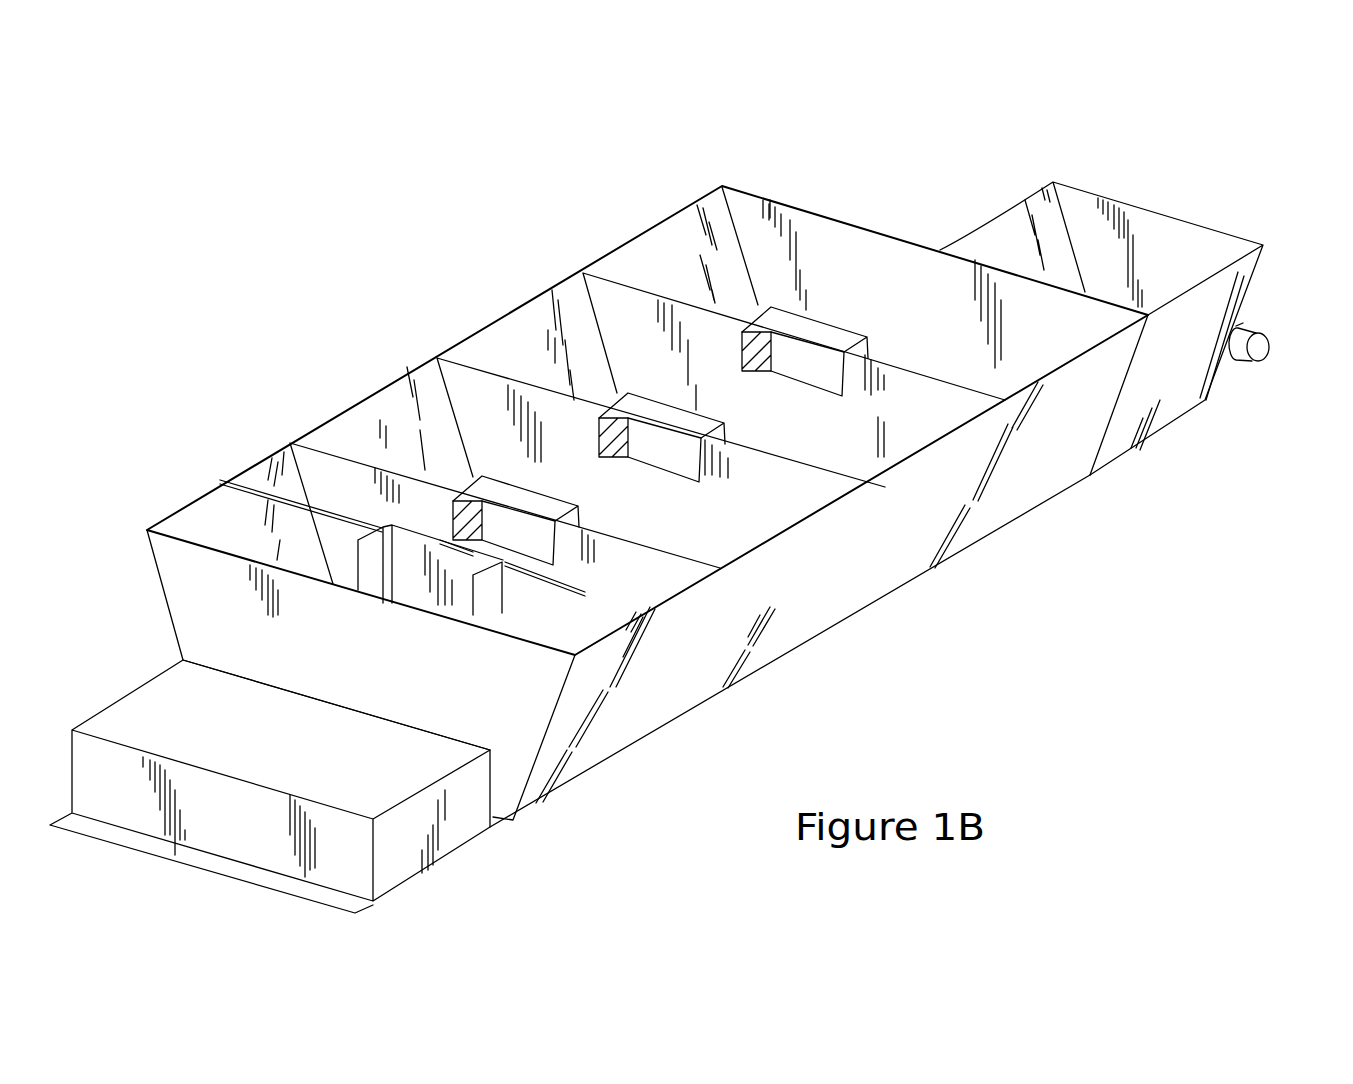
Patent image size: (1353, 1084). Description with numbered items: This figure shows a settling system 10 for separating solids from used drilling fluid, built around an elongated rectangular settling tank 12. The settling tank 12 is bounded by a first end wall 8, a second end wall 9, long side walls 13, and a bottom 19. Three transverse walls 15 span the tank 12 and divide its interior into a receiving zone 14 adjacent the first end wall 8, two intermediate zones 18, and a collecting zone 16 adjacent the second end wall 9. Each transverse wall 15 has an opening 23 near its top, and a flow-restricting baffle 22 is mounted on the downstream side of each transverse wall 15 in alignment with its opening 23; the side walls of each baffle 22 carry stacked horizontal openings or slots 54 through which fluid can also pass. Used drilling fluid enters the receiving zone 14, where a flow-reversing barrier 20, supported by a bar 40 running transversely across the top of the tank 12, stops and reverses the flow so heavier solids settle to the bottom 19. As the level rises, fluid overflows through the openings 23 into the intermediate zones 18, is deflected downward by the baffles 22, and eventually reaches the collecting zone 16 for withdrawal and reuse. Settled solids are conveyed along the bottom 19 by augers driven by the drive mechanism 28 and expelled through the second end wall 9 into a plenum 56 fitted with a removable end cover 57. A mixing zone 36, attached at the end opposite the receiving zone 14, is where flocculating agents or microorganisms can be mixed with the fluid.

The first end wall 8 is at (212, 630).
The second end wall 9 is at (888, 232).
The settling system 10 is at (375, 255).
The settling tank 12 is at (663, 684).
The side walls 13 is at (666, 249).
The receiving zone 14 is at (227, 523).
The transverse walls 15 is at (627, 267).
The collecting zone 16 is at (829, 270).
The intermediate zones 18 is at (540, 352).
The bottom 19 is at (1090, 473).
The flow-reversing barrier 20 is at (412, 565).
The flow-restricting baffle 22 is at (848, 328).
The opening 23 is at (808, 370).
The drive mechanism 28 is at (460, 817).
The mixing zone 36 is at (1157, 254).
The bar 40 is at (624, 594).
The horizontal openings 54 is at (762, 375).
The plenum 56 is at (1243, 323).
The end cover 57 is at (1262, 350).